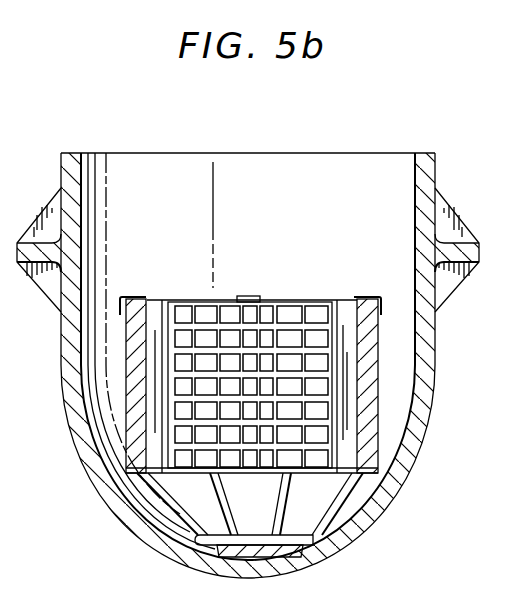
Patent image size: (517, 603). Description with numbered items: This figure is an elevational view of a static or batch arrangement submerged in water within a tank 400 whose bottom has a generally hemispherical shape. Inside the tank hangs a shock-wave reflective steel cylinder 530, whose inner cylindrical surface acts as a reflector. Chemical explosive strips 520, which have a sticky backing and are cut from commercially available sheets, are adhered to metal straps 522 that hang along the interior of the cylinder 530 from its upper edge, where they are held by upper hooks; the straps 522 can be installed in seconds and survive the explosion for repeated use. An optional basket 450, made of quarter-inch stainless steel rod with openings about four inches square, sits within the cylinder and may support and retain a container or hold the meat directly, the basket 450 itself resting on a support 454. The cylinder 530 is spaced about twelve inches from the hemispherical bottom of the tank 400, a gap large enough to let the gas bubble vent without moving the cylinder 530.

The tank 400 is at (99, 496).
The basket 450 is at (334, 291).
The support 454 is at (287, 508).
The chemical explosive strip 520 is at (156, 355).
The metal strap 522 is at (128, 296).
The shock-wave reflective steel cylinder 530 is at (367, 458).